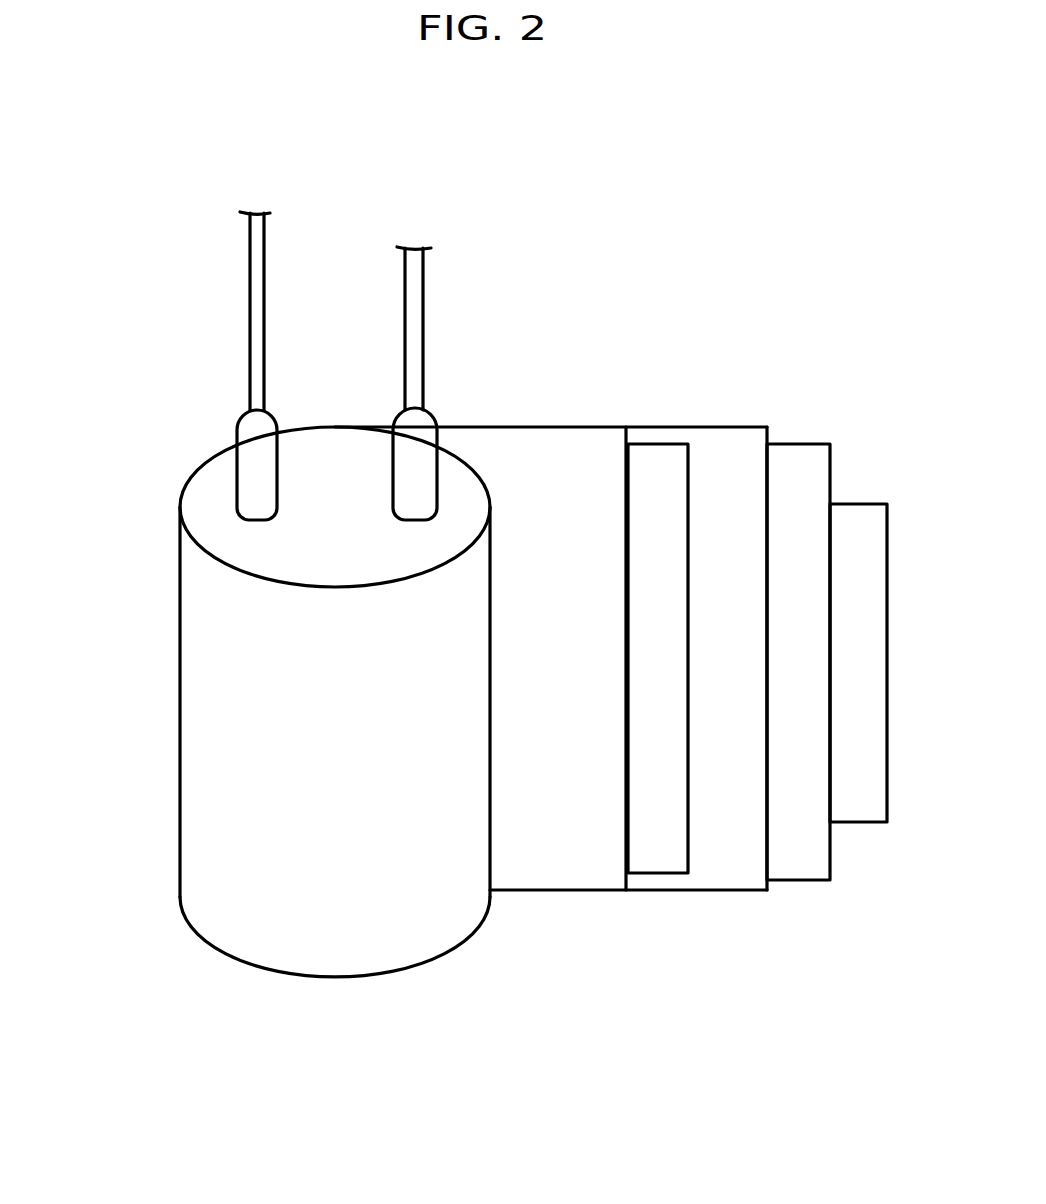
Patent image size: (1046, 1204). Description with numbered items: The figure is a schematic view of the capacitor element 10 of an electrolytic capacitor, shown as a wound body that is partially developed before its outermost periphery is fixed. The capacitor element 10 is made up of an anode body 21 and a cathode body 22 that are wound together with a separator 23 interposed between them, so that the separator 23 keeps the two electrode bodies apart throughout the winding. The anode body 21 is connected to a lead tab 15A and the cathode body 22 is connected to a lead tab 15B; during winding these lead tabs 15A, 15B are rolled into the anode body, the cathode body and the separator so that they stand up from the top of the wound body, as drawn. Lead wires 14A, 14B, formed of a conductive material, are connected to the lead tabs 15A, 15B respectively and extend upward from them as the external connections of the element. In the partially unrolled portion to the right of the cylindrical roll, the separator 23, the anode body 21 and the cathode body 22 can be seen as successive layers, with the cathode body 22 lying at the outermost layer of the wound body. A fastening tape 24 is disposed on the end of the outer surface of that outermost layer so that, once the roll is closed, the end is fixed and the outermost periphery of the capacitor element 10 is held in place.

The capacitor element 10 is at (621, 219).
The lead wire 14A is at (257, 270).
The lead wire 14B is at (423, 258).
The lead tab 15A is at (252, 440).
The lead tab 15B is at (418, 441).
The anode body 21 is at (671, 845).
The cathode body 22 is at (800, 867).
The separator 23 is at (574, 845).
The fastening tape 24 is at (857, 802).